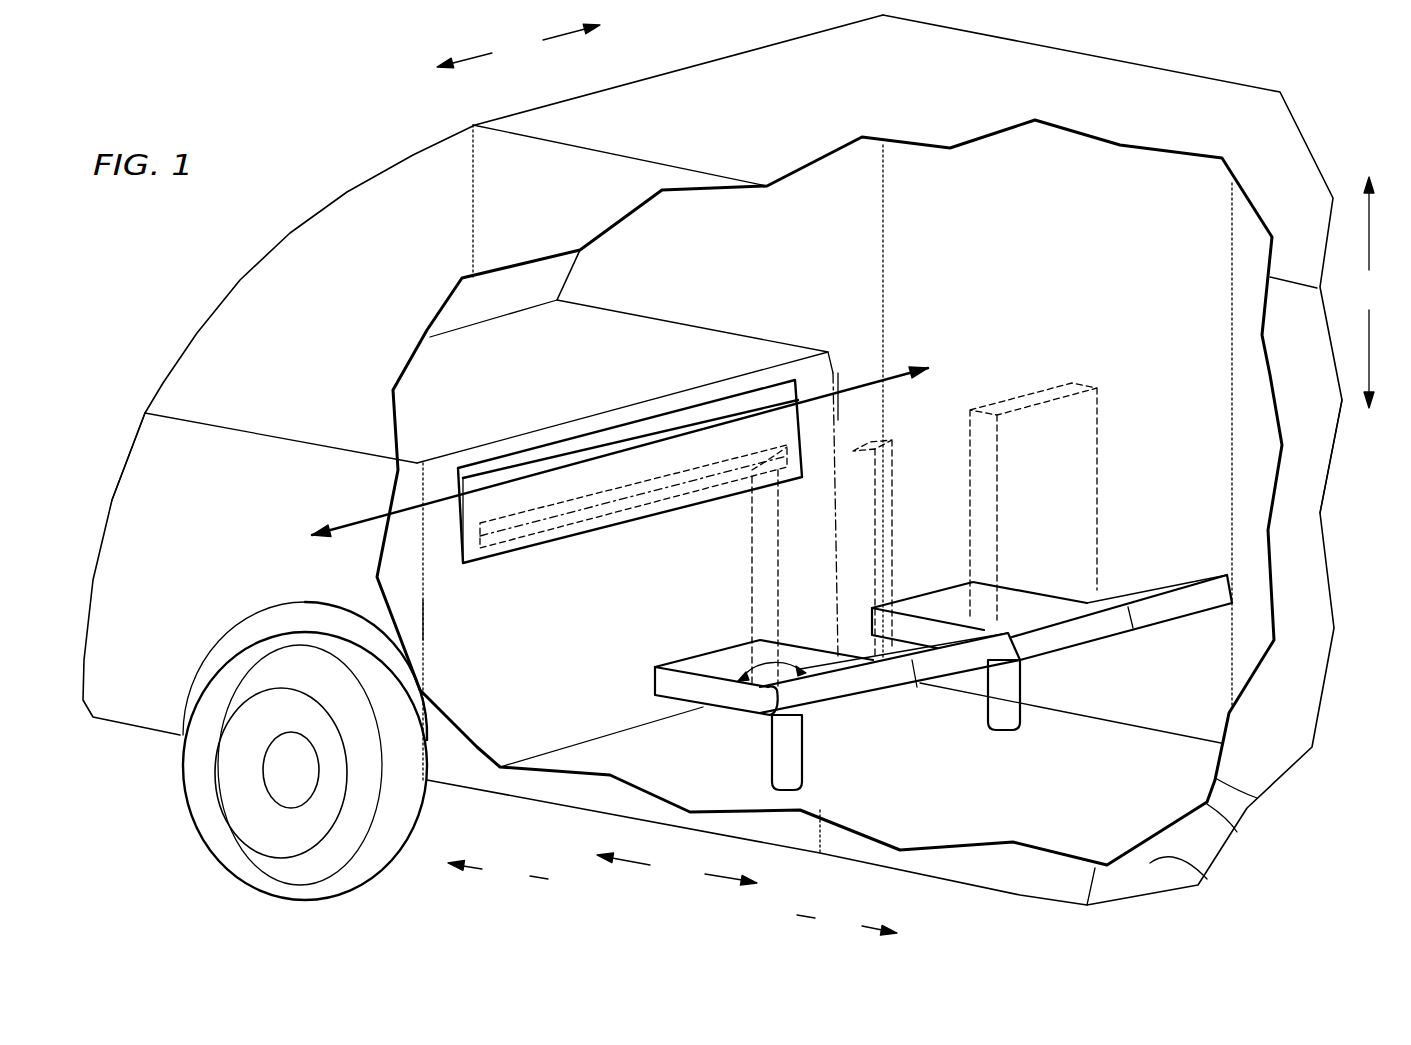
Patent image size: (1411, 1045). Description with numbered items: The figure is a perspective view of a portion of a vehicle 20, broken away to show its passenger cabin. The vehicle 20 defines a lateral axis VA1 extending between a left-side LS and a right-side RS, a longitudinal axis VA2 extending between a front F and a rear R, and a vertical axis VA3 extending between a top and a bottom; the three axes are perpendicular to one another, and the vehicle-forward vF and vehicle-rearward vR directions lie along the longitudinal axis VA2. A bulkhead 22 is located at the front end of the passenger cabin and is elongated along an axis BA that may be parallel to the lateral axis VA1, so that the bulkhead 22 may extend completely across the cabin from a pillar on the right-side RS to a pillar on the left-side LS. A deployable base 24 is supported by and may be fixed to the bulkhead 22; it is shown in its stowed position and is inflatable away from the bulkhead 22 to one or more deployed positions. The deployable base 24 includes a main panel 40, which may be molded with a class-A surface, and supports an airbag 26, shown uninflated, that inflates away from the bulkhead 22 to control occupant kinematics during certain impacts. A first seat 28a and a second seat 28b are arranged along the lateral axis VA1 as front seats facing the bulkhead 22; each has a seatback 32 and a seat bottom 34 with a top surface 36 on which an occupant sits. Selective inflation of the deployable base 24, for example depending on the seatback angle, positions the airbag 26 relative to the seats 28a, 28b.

The vehicle 20 is at (308, 148).
The bulkhead 22 is at (736, 350).
The deployable base 24 is at (670, 430).
The airbag 26 is at (530, 545).
The first seat 28a is at (720, 728).
The second seat 28b is at (1086, 659).
The seatback 32 is at (1100, 428).
The seat bottom 34 is at (668, 685).
The top surface 36 is at (708, 662).
The main panel 40 is at (535, 465).
The front F is at (112, 500).
The rear R is at (1371, 565).
The left-side LS is at (423, 615).
The right-side RS is at (840, 372).
The axis of the bulkhead BA is at (368, 520).
The lateral axis VA1 is at (518, 46).
The longitudinal axis VA2 is at (677, 869).
The vertical axis VA3 is at (1369, 292).
The vehicle-forward vF is at (498, 870).
The vehicle-rearward vR is at (847, 924).